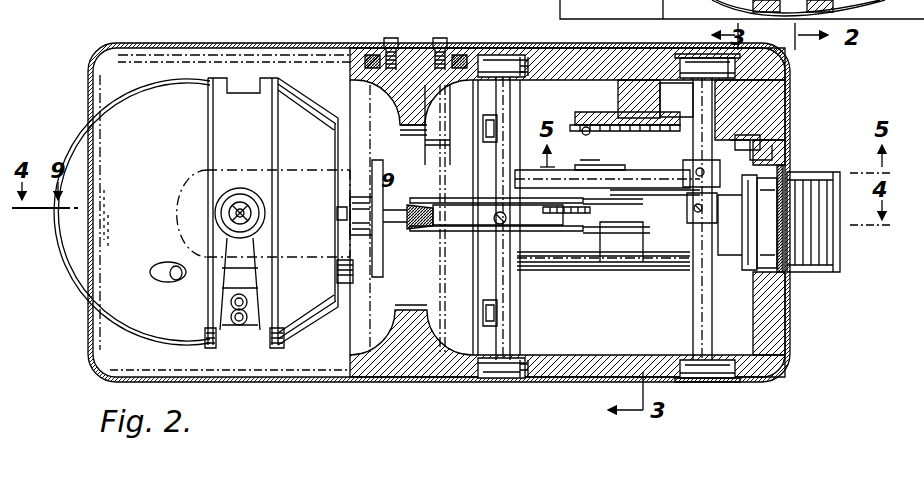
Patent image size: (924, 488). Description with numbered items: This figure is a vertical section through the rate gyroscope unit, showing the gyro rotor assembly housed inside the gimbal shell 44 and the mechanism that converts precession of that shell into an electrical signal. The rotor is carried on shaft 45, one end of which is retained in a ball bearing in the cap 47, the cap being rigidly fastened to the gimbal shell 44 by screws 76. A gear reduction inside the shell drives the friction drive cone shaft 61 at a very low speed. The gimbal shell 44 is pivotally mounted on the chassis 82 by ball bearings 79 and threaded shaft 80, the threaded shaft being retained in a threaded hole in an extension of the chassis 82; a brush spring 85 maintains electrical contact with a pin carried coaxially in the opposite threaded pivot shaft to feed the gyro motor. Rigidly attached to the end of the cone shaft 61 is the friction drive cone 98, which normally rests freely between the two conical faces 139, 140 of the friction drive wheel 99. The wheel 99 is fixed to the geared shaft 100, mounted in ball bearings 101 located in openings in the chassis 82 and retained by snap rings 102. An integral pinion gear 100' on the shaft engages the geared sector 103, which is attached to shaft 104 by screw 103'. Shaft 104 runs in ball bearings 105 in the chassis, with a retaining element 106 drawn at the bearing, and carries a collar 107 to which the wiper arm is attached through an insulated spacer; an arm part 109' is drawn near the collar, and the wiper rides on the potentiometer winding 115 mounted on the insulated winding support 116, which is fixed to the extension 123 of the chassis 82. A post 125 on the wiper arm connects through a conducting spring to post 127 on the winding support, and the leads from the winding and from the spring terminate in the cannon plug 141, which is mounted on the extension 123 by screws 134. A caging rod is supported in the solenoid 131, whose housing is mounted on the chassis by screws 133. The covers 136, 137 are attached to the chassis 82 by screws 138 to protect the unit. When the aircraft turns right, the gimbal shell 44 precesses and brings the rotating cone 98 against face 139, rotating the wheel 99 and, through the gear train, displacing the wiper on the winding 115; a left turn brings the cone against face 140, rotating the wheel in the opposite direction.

The gimbal shell 44 is at (282, 332).
The shaft 45 is at (110, 286).
The cap 47 is at (112, 247).
The friction drive cone shaft 61 is at (398, 232).
The screws 76 is at (180, 283).
The ball bearings 79 is at (260, 205).
The threaded shaft 80 is at (258, 217).
The chassis 82 is at (417, 46).
The brush spring 85 is at (300, 175).
The friction drive cone 98 is at (398, 240).
The friction drive wheel 99 is at (532, 226).
The geared shaft 100 is at (513, 218).
The integral pinion gear 100' is at (424, 220).
The ball bearings 101 is at (490, 56).
The snap rings 102 is at (518, 56).
The geared sector 103 is at (607, 165).
The screw 103' is at (681, 216).
The shaft 104 is at (693, 297).
The ball bearings 105 is at (736, 70).
The washer 106 is at (691, 55).
The collar 107 is at (690, 183).
The bracket 109' is at (600, 156).
The potentiometer winding 115 is at (663, 190).
The insulated winding support 116 is at (578, 112).
The extension of chassis 123 is at (612, 62).
The post 125 is at (786, 152).
The post 127 is at (760, 140).
The solenoid 131 is at (723, 268).
The screws 133 is at (497, 125).
The screws 134 is at (788, 280).
The cover 136 is at (790, 355).
The cover 137 is at (205, 44).
The screws 138 is at (390, 38).
The face 139 is at (470, 232).
The face 140 is at (447, 197).
The cannon plug 141 is at (822, 275).